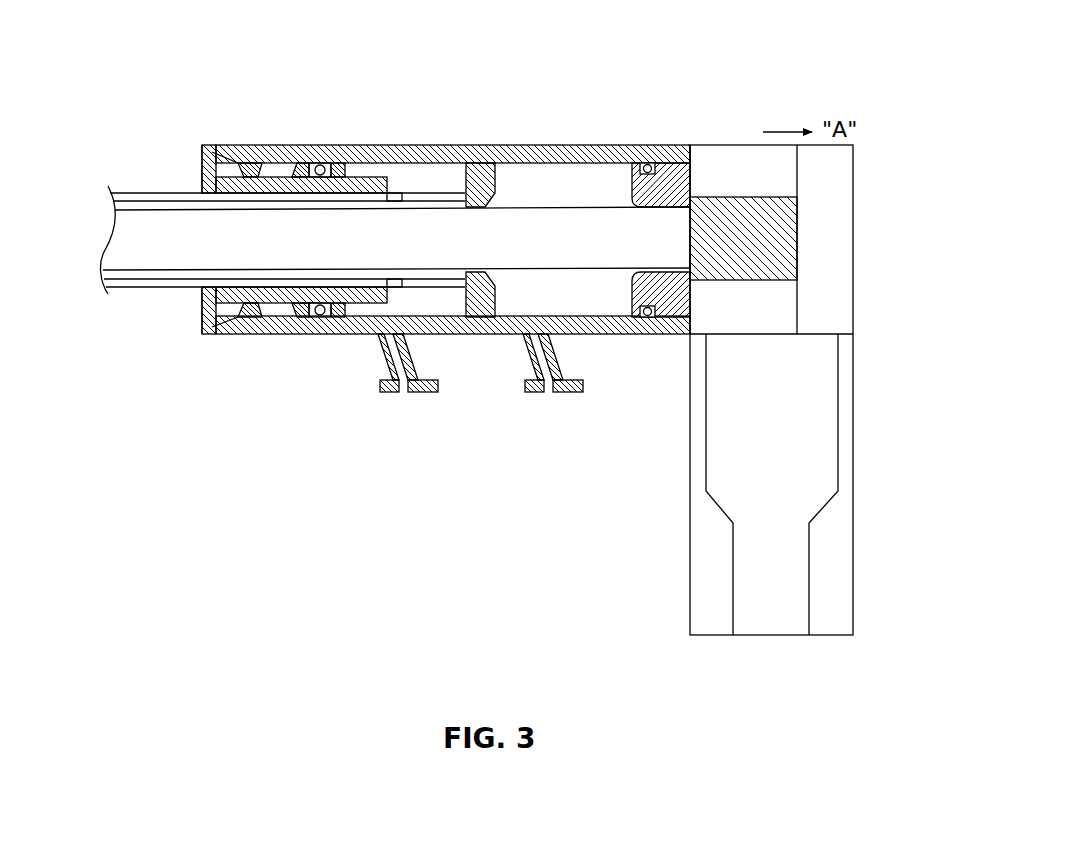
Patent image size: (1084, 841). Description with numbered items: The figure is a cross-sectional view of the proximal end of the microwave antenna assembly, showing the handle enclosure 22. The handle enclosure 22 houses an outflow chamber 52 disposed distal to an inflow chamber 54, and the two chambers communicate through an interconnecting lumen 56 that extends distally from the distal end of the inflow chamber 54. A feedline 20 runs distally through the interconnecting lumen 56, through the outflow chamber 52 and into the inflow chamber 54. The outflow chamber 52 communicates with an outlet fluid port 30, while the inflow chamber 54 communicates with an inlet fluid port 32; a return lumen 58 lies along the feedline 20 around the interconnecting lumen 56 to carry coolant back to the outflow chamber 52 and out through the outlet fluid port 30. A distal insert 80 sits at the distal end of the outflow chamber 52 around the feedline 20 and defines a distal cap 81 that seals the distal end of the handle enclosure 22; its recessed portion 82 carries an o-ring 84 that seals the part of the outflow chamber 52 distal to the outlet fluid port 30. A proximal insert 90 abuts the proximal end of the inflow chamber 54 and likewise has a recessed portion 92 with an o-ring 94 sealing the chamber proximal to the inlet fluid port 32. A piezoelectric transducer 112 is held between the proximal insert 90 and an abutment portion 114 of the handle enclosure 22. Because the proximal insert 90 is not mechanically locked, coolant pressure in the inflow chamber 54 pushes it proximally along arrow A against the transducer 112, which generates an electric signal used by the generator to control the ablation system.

The feedline 20 is at (363, 228).
The handle enclosure 22 is at (474, 82).
The outlet fluid port 30 is at (405, 381).
The inlet fluid port 32 is at (550, 381).
The outflow chamber 52 is at (468, 185).
The inflow chamber 54 is at (553, 158).
The interconnecting lumen 56 is at (481, 298).
The return lumen 58 is at (160, 290).
The distal insert 80 is at (250, 160).
The distal cap 81 is at (203, 168).
The recessed portion 82 is at (305, 162).
The o-ring 84 is at (324, 162).
The proximal insert 90 is at (692, 143).
The recessed portion 92 is at (652, 162).
The o-ring 94 is at (645, 162).
The piezoelectric transducer 112 is at (713, 283).
The abutment portion 114 is at (843, 203).